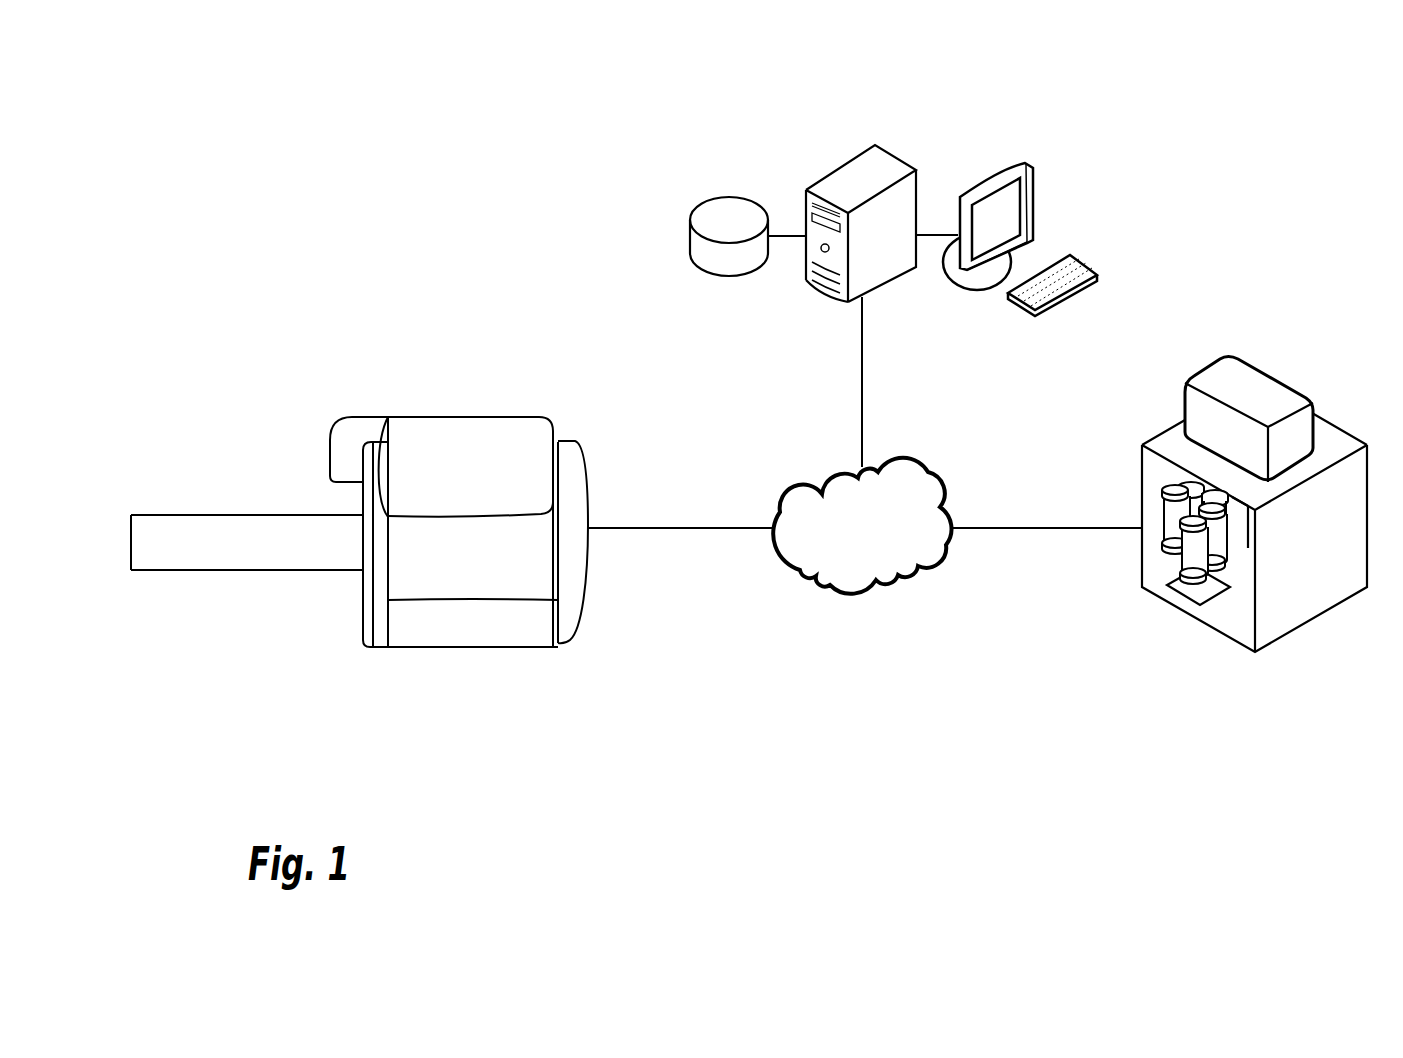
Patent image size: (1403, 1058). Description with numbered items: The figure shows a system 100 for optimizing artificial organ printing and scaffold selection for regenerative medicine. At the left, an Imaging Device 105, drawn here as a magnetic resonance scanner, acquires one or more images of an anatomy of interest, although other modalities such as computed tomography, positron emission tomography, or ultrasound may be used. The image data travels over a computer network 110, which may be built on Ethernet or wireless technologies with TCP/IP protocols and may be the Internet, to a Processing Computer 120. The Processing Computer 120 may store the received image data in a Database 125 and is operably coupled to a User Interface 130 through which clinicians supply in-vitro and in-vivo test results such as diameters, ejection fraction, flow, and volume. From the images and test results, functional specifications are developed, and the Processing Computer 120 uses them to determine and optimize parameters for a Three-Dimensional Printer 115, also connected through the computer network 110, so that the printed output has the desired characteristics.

The system 100 is at (386, 99).
The imaging device 105 is at (467, 415).
The computer network 110 is at (935, 473).
The three-dimensional printer 115 is at (1245, 358).
The processing computer 120 is at (887, 150).
The database 125 is at (740, 197).
The user interface 130 is at (1033, 177).